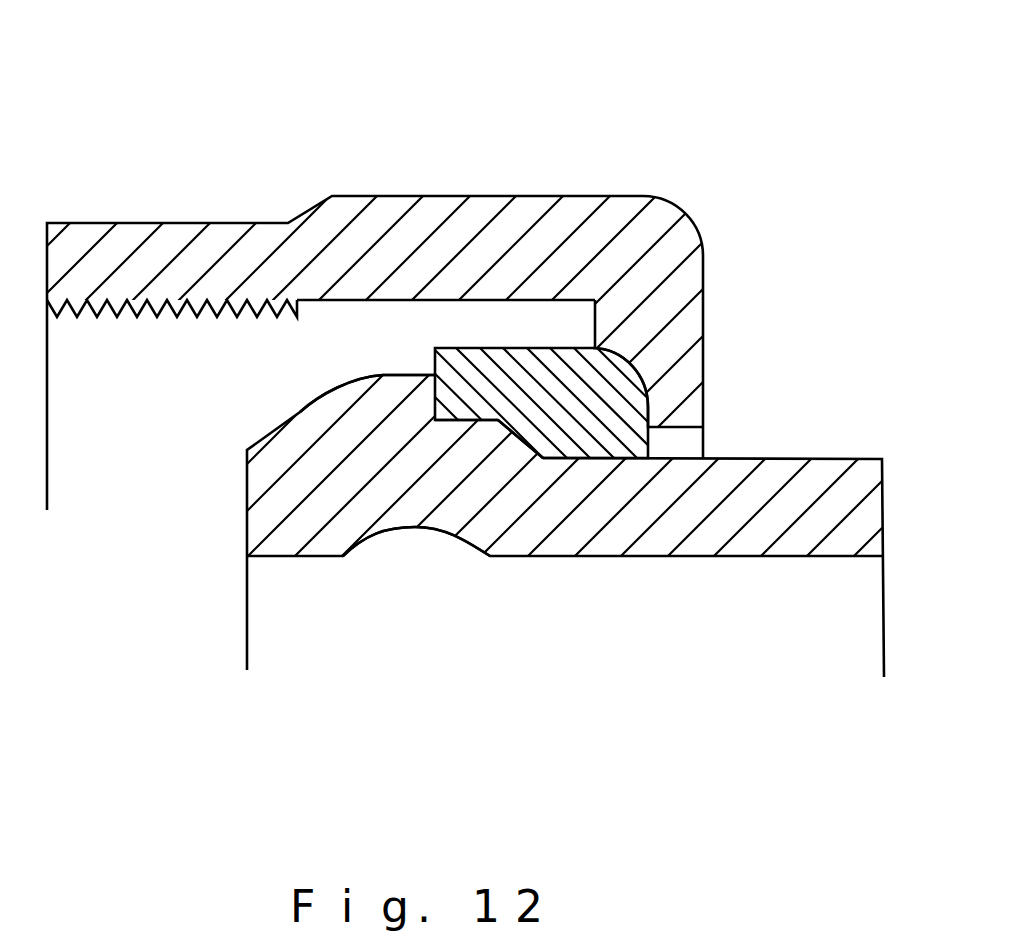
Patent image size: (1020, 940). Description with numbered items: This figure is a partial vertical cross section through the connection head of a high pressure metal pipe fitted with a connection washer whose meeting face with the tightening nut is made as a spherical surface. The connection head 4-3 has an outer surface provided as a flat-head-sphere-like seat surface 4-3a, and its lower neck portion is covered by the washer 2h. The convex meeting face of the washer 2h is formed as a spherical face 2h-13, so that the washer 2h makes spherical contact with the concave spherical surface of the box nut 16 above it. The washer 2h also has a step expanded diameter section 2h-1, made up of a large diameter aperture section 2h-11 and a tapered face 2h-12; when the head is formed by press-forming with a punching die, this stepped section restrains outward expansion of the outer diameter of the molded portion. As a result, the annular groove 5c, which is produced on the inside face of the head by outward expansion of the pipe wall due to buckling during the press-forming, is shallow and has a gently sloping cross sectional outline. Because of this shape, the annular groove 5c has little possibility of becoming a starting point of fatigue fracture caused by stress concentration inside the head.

The box nut 16 is at (377, 217).
The washer 2h is at (540, 355).
The step expanded diameter section 2h-1 is at (492, 326).
The large diameter aperture section 2h-11 is at (450, 420).
The tapered face 2h-12 is at (520, 440).
The spherical face 2h-13 is at (637, 372).
The connection head 4-3 is at (297, 482).
The flat-head-sphere-like seat surface 4-3a is at (320, 400).
The annular groove 5c is at (387, 533).